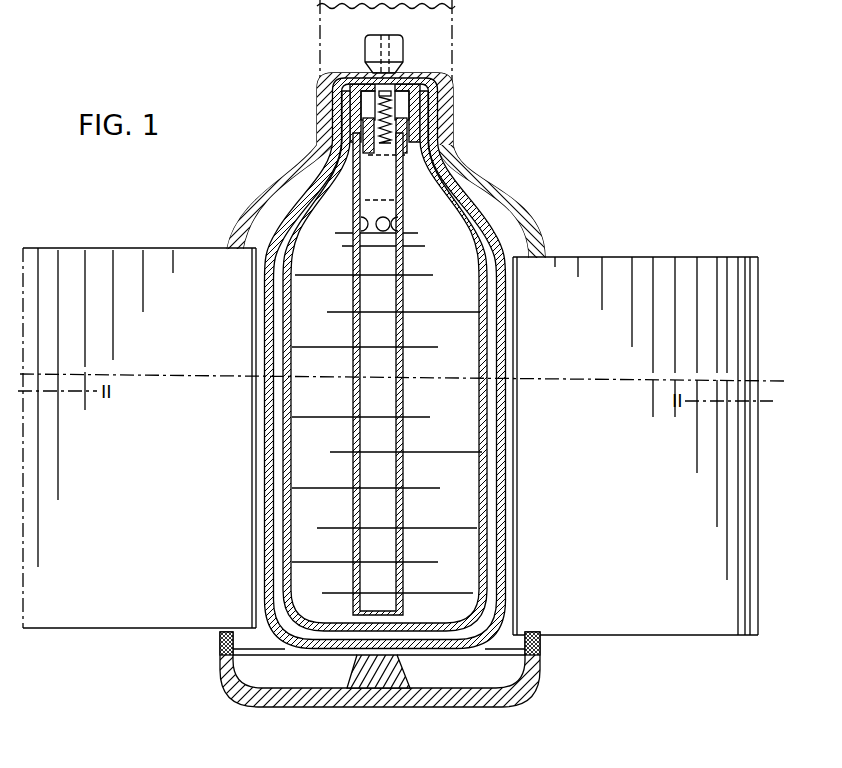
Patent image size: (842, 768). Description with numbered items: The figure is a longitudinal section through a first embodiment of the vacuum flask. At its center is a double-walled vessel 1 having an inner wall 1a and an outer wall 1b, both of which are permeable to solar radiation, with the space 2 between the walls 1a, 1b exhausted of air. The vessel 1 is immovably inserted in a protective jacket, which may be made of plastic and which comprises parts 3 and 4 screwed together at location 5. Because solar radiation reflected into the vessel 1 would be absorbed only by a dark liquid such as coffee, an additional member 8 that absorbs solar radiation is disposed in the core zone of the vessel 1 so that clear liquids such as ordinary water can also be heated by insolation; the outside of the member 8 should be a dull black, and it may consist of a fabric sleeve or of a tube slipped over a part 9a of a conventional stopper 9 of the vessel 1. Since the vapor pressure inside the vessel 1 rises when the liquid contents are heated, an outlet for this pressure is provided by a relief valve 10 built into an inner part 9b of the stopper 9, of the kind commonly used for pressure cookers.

The double-walled vessel 1 is at (472, 228).
The inner wall 1a is at (488, 496).
The outer wall 1b is at (498, 522).
The space 2 is at (488, 557).
The protective jacket part 3 is at (263, 207).
The protective jacket part 4 is at (320, 695).
The screw location 5 is at (222, 648).
The solar radiation absorbing member 8 is at (353, 433).
The stopper 9 is at (437, 97).
The stopper part 9a is at (407, 147).
The inner part of stopper 9b is at (398, 43).
The relief valve 10 is at (367, 60).